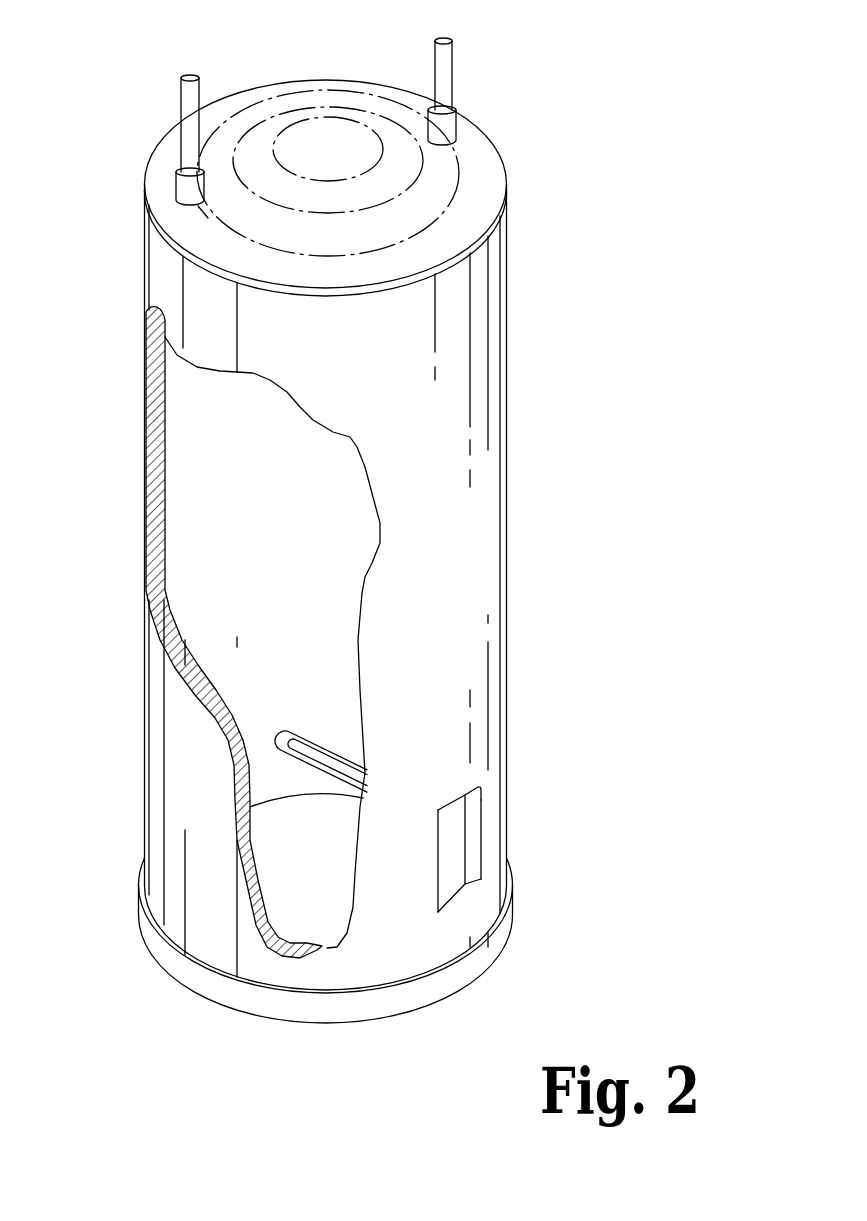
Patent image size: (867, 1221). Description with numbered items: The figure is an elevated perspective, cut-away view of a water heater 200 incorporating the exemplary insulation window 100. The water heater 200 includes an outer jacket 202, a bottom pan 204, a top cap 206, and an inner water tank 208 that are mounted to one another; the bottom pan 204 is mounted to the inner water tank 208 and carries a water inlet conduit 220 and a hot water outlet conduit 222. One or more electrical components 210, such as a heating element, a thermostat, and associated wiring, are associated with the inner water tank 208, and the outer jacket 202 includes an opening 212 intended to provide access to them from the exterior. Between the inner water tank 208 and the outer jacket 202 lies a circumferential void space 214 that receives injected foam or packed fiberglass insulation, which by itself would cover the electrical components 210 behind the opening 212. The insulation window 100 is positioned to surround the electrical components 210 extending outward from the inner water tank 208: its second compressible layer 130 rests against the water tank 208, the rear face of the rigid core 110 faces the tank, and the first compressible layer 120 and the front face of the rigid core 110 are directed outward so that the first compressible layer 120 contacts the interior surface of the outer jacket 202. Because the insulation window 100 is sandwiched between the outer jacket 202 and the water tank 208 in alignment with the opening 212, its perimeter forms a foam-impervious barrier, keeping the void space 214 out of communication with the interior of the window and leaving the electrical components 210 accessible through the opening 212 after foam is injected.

The water heater 200 is at (358, 513).
The outer jacket 202 is at (475, 478).
The bottom pan 204 is at (450, 988).
The top cap 206 is at (483, 197).
The inner water tank 208 is at (247, 592).
The electrical components 210 is at (303, 735).
The opening 212 is at (531, 843).
The void space 214 is at (147, 503).
The water inlet conduit 220 is at (180, 107).
The hot water outlet conduit 222 is at (446, 65).
The insulation window 100 is at (518, 843).
The rigid core 110 is at (470, 868).
The first compressible layer 120 is at (480, 845).
The second compressible layer 130 is at (465, 807).